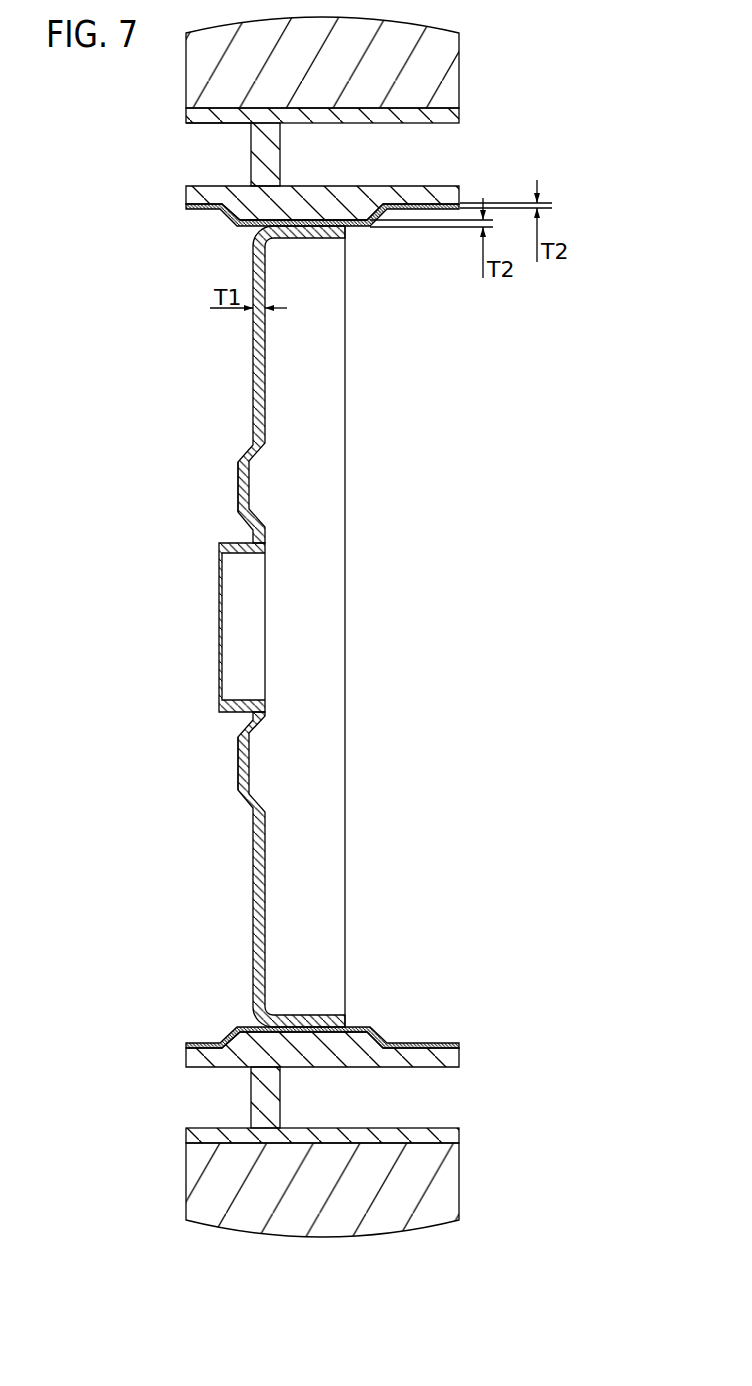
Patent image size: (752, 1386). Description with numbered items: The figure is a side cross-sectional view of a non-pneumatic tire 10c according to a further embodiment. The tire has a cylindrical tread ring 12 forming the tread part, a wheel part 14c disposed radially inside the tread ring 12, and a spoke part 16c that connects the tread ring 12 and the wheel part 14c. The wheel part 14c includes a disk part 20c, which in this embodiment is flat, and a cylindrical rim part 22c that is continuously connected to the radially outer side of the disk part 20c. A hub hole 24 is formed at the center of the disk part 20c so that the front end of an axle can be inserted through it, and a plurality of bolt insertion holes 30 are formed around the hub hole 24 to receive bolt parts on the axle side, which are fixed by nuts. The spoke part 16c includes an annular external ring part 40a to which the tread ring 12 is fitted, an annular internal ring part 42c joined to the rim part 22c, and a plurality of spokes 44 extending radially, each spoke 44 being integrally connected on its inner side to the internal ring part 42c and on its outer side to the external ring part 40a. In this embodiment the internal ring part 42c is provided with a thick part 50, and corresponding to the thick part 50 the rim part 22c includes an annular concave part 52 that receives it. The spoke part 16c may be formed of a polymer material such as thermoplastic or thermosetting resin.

The non-pneumatic tire 10c is at (568, 110).
The tread ring 12 is at (200, 87).
The wheel part 14c is at (352, 391).
The spoke part 16c is at (464, 113).
The disk part 20c is at (333, 320).
The rim part 22c is at (436, 1043).
The hub hole 24 is at (245, 638).
The bolt insertion hole 30 is at (243, 490).
The external ring part 40a is at (200, 124).
The internal ring part 42c is at (195, 187).
The spoke 44 is at (275, 158).
The thick part 50 is at (242, 207).
The annular concave part 52 is at (337, 219).